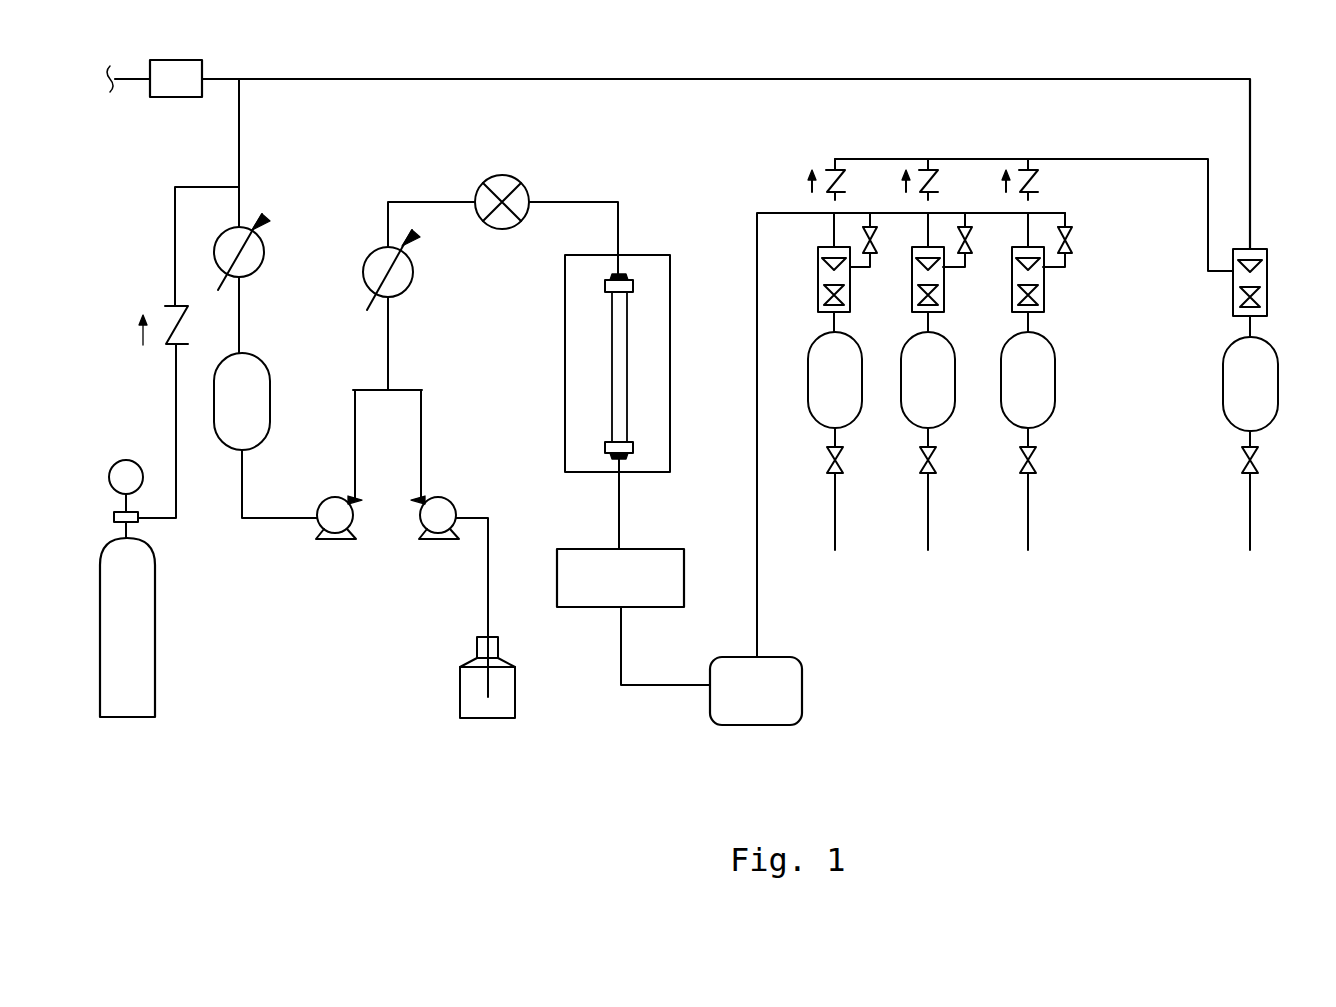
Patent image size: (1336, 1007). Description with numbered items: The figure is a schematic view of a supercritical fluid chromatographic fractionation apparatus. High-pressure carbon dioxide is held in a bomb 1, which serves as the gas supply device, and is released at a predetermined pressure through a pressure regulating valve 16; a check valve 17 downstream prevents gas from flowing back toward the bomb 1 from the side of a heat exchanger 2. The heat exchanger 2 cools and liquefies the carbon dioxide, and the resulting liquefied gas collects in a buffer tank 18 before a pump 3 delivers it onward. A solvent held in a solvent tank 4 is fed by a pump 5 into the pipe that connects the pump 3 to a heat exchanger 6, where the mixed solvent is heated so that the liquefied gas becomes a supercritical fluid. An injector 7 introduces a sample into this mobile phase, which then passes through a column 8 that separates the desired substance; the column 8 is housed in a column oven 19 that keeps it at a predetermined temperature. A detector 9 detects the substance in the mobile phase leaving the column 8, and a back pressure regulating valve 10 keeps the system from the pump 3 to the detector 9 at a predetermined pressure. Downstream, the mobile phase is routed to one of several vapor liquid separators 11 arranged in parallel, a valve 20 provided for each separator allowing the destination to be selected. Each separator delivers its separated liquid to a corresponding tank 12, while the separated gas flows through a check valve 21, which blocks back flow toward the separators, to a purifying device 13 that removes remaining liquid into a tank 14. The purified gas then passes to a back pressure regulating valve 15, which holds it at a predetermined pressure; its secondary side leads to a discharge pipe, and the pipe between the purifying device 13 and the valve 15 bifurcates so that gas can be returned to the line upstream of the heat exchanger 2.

The bomb 1 is at (155, 660).
The heat exchanger 2 is at (265, 250).
The pump 3 is at (336, 540).
The solvent tank 4 is at (515, 705).
The pump 5 is at (440, 540).
The heat exchanger 6 is at (413, 272).
The injector 7 is at (523, 185).
The column 8 is at (627, 340).
The detector 9 is at (684, 575).
The back pressure regulating valve 10 is at (802, 695).
The vapor liquid separators 11 is at (852, 298).
The tanks 12 is at (862, 410).
The purifying device 13 is at (1270, 305).
The tank 14 is at (1278, 408).
The back pressure regulating valve 15 is at (178, 60).
The pressure regulating valve 16 is at (113, 515).
The check valve 17 is at (170, 306).
The buffer tank 18 is at (270, 390).
The column oven 19 is at (670, 295).
The valve 20 is at (878, 238).
The check valve 21 is at (835, 168).